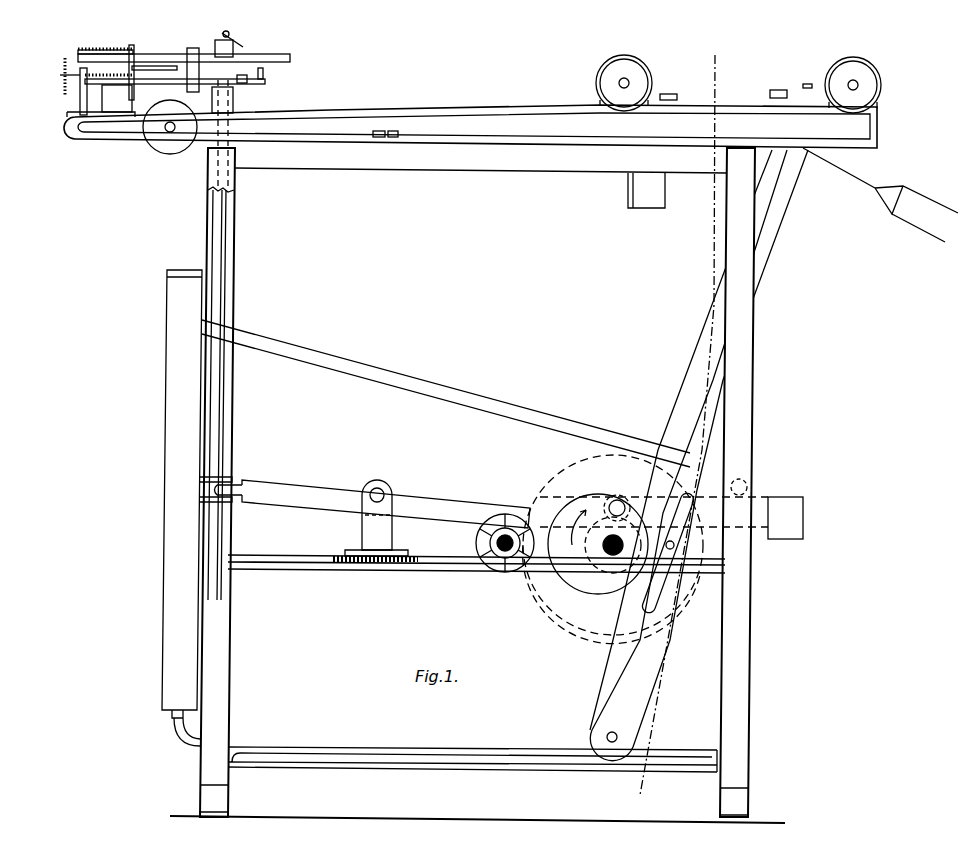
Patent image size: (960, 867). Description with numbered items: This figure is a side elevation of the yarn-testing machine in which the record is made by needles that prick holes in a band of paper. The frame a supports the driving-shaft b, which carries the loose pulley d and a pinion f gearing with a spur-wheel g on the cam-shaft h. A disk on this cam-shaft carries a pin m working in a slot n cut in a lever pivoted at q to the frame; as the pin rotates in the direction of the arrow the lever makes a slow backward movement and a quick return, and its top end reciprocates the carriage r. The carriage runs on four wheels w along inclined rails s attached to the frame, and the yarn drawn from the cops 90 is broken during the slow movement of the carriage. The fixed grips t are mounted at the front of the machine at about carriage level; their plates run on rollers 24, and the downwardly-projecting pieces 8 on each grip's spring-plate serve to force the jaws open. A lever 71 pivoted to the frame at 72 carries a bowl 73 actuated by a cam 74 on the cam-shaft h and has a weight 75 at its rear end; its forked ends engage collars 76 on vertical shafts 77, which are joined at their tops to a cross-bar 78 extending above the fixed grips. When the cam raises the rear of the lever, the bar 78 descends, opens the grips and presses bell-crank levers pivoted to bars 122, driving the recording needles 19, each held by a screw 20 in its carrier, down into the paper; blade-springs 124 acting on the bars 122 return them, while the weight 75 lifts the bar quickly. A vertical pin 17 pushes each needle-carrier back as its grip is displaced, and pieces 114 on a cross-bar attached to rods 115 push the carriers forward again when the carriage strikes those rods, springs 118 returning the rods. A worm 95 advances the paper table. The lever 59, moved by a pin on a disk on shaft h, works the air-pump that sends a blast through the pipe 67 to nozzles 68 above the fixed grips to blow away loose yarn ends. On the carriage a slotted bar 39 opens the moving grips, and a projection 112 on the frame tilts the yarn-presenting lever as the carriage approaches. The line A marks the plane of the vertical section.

The springs 118 is at (80, 52).
The vertical pin 17 is at (128, 72).
The rods 115 is at (150, 55).
The screw 20 is at (160, 66).
The cross-bar 78 is at (220, 46).
The pipe 67 is at (245, 40).
The nozzles 68 is at (235, 52).
The fixed grips t is at (262, 80).
The downwardly-projecting pieces 8 is at (235, 92).
The rollers 24 is at (270, 97).
The wheels w is at (627, 58).
The blade-springs 124 is at (98, 87).
The downwardly-projecting pieces 114 is at (160, 118).
The worm 95 is at (170, 127).
The needle 19 is at (140, 118).
The bars 122 is at (215, 115).
The projection 112 is at (392, 130).
The rails s is at (558, 106).
The section line A A is at (675, 424).
The bar 39 is at (672, 94).
The carriage r is at (748, 98).
The cops 90 is at (880, 195).
The vertical shafts 77 is at (224, 232).
The lever 59 is at (508, 416).
The collar 76 is at (238, 476).
The pivot 72 is at (381, 491).
The lever 71 is at (467, 494).
The bowl 73 is at (612, 503).
The weight 75 is at (800, 498).
The loose pulley d is at (477, 535).
The pinion f is at (490, 546).
The driving-shaft b is at (500, 553).
The pin m is at (675, 545).
The slot n is at (662, 566).
The spur-wheel g is at (540, 580).
The cam 74 is at (598, 556).
The cam-shaft h is at (608, 552).
The frame a is at (205, 775).
The pivot q is at (611, 745).